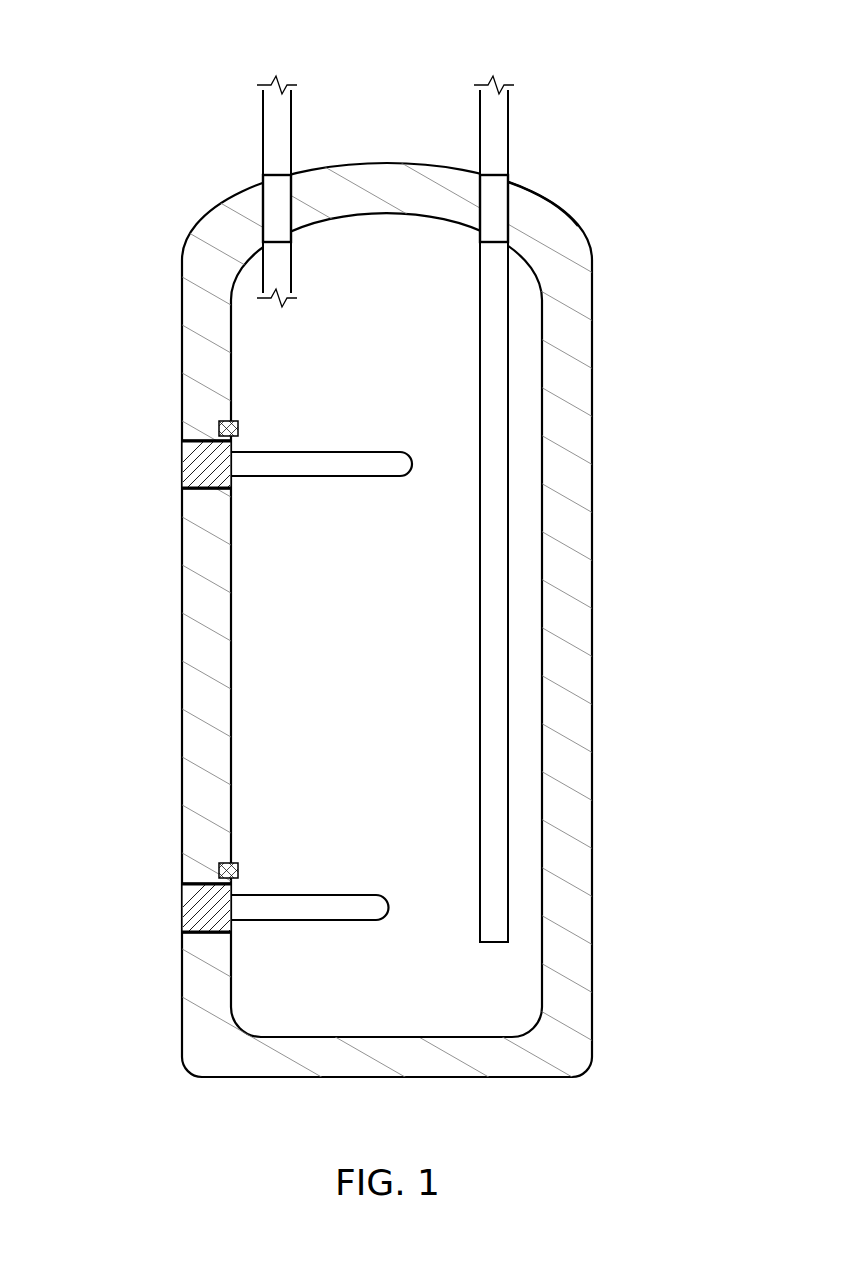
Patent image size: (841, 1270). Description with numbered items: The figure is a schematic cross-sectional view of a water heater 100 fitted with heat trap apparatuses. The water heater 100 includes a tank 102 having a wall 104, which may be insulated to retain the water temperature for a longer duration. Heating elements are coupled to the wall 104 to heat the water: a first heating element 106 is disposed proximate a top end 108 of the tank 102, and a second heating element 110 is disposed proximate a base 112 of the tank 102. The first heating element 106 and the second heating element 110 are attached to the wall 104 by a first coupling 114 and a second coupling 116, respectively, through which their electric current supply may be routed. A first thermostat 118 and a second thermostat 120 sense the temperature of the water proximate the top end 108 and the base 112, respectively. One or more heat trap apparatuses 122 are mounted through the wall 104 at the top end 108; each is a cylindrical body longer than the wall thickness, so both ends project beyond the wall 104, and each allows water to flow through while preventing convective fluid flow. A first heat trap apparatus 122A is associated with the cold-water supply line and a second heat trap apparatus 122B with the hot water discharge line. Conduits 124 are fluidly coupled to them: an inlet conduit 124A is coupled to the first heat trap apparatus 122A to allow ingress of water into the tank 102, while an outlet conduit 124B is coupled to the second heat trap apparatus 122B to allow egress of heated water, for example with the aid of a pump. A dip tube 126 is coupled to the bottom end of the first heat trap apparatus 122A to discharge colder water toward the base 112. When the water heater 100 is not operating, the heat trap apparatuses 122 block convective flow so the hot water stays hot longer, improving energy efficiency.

The water heater 100 is at (178, 60).
The tank 102 is at (578, 226).
The wall 104 is at (573, 343).
The first heating element 106 is at (327, 476).
The top end 108 is at (603, 235).
The second heating element 110 is at (315, 909).
The base 112 is at (428, 1037).
The first coupling 114 is at (202, 462).
The second coupling 116 is at (203, 905).
The first thermostat 118 is at (220, 424).
The second thermostat 120 is at (220, 866).
The heat trap apparatuses 122 is at (110, 127).
The first heat trap apparatus 122A is at (492, 192).
The second heat trap apparatus 122B is at (278, 208).
The conduits 124 is at (404, 473).
The inlet conduit 124A is at (404, 500).
The outlet conduit 124B is at (247, 182).
The dip tube 126 is at (500, 908).